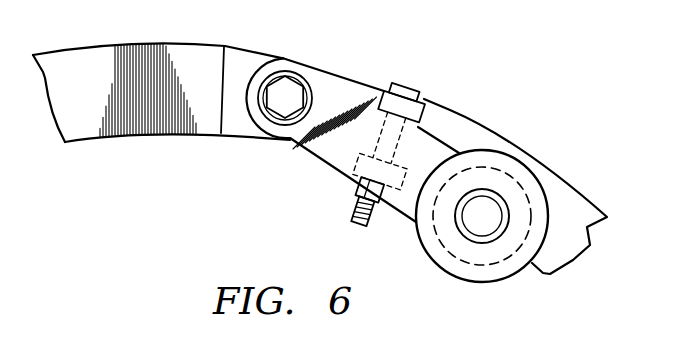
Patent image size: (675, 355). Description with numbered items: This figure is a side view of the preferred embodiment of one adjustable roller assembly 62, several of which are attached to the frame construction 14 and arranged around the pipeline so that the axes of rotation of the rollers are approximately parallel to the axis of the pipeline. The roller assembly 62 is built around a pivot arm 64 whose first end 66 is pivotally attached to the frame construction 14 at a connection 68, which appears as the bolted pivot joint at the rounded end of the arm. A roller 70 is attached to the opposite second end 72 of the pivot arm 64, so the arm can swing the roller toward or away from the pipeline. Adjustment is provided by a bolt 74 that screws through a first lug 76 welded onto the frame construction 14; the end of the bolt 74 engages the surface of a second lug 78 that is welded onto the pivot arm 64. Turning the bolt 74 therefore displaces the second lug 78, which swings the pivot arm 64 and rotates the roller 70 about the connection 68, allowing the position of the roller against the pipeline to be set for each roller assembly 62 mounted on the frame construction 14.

The frame construction 14 is at (92, 134).
The adjustable roller assembly 62 is at (200, 167).
The pivot arm 64 is at (318, 157).
The first end 66 is at (326, 82).
The connection 68 is at (283, 74).
The roller 70 is at (505, 276).
The second end 72 is at (442, 140).
The bolt 74 is at (410, 89).
The first lug 76 is at (380, 103).
The second lug 78 is at (352, 183).